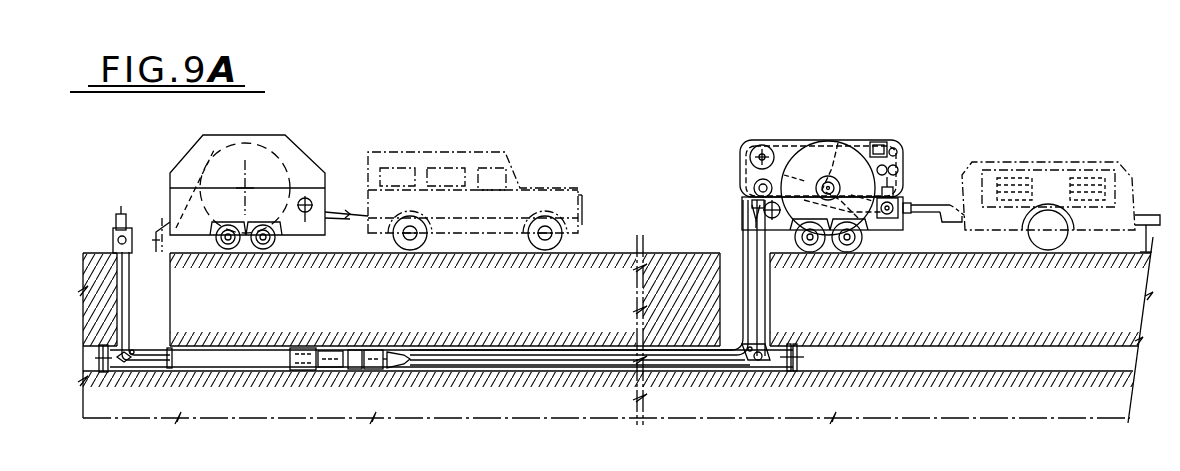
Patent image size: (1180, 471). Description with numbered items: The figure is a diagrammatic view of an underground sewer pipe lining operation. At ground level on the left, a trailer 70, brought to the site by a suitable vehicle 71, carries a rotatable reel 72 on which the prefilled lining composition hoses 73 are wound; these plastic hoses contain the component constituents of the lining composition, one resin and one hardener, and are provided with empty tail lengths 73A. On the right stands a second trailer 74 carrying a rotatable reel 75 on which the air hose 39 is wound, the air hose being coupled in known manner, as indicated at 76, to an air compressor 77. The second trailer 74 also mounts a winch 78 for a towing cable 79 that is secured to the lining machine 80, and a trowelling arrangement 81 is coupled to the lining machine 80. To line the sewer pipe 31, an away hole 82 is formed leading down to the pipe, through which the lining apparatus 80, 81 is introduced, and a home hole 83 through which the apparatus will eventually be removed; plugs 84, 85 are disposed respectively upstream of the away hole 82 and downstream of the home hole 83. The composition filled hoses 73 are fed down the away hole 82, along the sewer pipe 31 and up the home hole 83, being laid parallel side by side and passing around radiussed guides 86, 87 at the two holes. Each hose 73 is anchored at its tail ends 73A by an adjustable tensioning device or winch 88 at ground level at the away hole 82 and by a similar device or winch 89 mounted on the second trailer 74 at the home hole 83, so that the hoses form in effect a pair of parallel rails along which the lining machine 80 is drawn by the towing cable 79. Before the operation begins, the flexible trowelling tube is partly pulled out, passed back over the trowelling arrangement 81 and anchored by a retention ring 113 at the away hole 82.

The underground sewer pipe 31 is at (500, 370).
The air hose 39 is at (555, 347).
The trailer 70 is at (290, 152).
The vehicle 71 is at (440, 150).
The rotatable reel 72 is at (290, 170).
The prefilled lining composition hoses 73 is at (153, 218).
The empty tail lengths 73A is at (128, 305).
The second trailer 74 is at (855, 140).
The rotatable reel 75 is at (810, 162).
The coupling 76 is at (926, 206).
The air compressor 77 is at (1020, 186).
The winch 78 is at (755, 200).
The towing cable 79 is at (706, 368).
The lining machine 80 is at (372, 367).
The trowelling arrangement 81 is at (302, 365).
The away hole 82 is at (143, 270).
The home hole 83 is at (735, 305).
The plug 84 is at (110, 365).
The plug 85 is at (795, 368).
The radiussed guide 86 is at (131, 360).
The radiussed guide 87 is at (764, 362).
The adjustable tensioning device or winch 88 is at (118, 212).
The tensioning device or winch 89 is at (747, 222).
The retention ring 113 is at (172, 358).